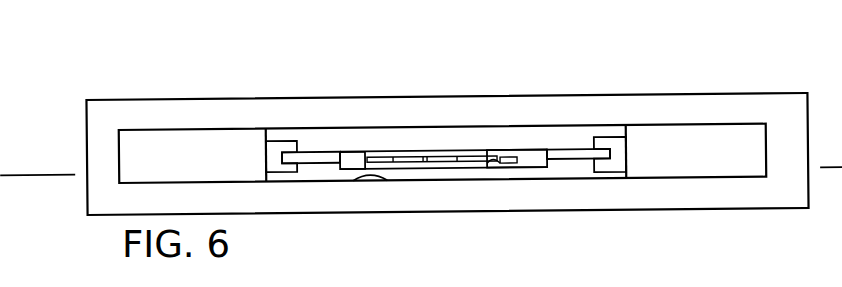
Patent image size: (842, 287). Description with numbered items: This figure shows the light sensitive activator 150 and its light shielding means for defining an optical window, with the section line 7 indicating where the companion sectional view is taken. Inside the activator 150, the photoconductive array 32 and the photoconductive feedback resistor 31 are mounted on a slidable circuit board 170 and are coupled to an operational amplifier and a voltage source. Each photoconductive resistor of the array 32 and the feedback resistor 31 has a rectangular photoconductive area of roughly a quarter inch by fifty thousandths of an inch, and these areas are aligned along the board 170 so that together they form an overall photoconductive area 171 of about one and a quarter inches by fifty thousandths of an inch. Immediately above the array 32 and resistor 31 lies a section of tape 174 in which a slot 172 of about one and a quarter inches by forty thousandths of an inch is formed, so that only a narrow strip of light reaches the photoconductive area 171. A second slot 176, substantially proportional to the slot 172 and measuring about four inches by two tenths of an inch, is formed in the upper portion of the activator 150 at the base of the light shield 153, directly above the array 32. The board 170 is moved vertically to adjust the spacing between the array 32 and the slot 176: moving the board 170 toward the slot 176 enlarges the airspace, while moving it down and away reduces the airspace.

The section line 7- 7 is at (31, 156).
The light sensitive activator 150 is at (199, 91).
The light shield 153 is at (688, 148).
The slidable circuit board 170 is at (570, 152).
The overall photoconductive area 171 is at (371, 144).
The slot 172 is at (484, 160).
The section of tape 174 is at (472, 151).
The photoconductive feedback resistor 31 is at (429, 169).
The photoconductive array 32 is at (543, 134).
The second slot 176 is at (388, 180).